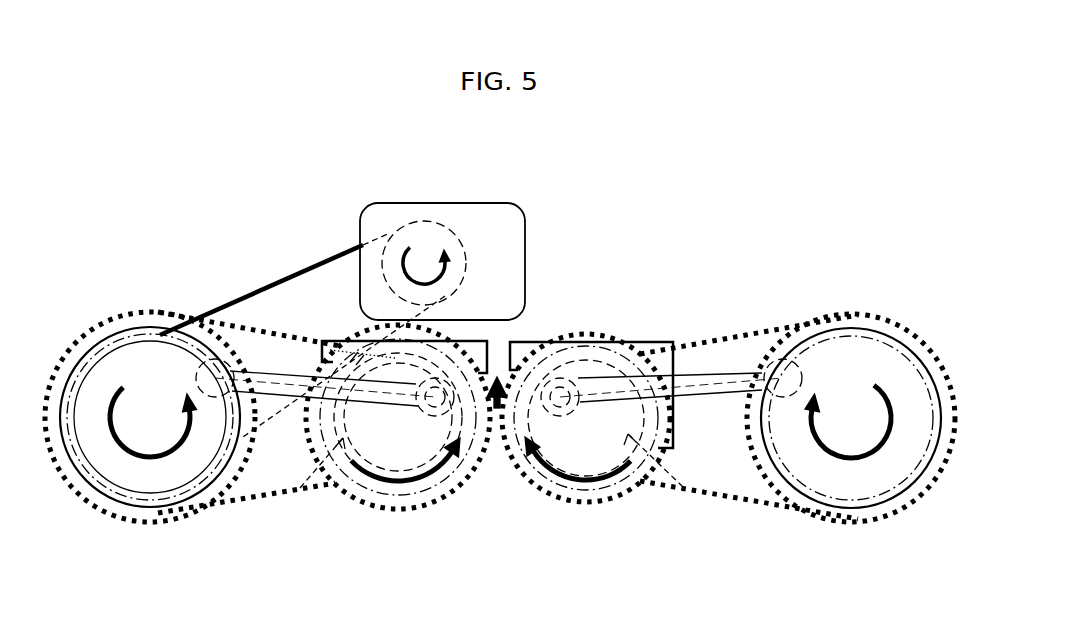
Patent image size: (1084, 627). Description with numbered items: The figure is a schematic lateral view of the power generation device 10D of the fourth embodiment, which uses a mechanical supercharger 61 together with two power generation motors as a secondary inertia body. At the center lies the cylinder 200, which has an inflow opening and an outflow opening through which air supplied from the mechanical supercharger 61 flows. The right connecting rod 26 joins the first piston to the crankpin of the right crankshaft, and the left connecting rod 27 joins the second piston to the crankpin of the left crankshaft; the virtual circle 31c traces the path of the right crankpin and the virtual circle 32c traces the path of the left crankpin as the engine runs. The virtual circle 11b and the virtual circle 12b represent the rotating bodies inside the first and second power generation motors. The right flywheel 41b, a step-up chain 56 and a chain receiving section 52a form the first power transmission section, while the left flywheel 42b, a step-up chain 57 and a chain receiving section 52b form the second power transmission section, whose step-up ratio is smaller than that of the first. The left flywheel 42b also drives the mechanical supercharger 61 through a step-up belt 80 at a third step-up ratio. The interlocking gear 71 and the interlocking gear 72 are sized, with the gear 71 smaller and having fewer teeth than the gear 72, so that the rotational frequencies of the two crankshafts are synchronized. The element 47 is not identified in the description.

The power generation device 10D is at (866, 172).
The mechanical supercharger 61 is at (483, 202).
The step-up belt 80 is at (283, 268).
The left flywheel 42b is at (115, 347).
The right flywheel 41b is at (903, 336).
The roller outer layer 47 is at (90, 490).
The virtual circle 32c is at (144, 441).
The virtual circle 31c is at (860, 441).
The virtual circle 12b is at (405, 500).
The virtual circle 11b is at (587, 497).
The step-up chain 57 is at (318, 343).
The step-up chain 56 is at (703, 337).
The cylinder 200 is at (515, 341).
The left connecting rod 27 is at (277, 372).
The right connecting rod 26 is at (712, 385).
The interlocking gear 72 is at (452, 492).
The interlocking gear 71 is at (632, 490).
The chain receiving section 52b is at (300, 488).
The chain receiving section 52a is at (683, 487).